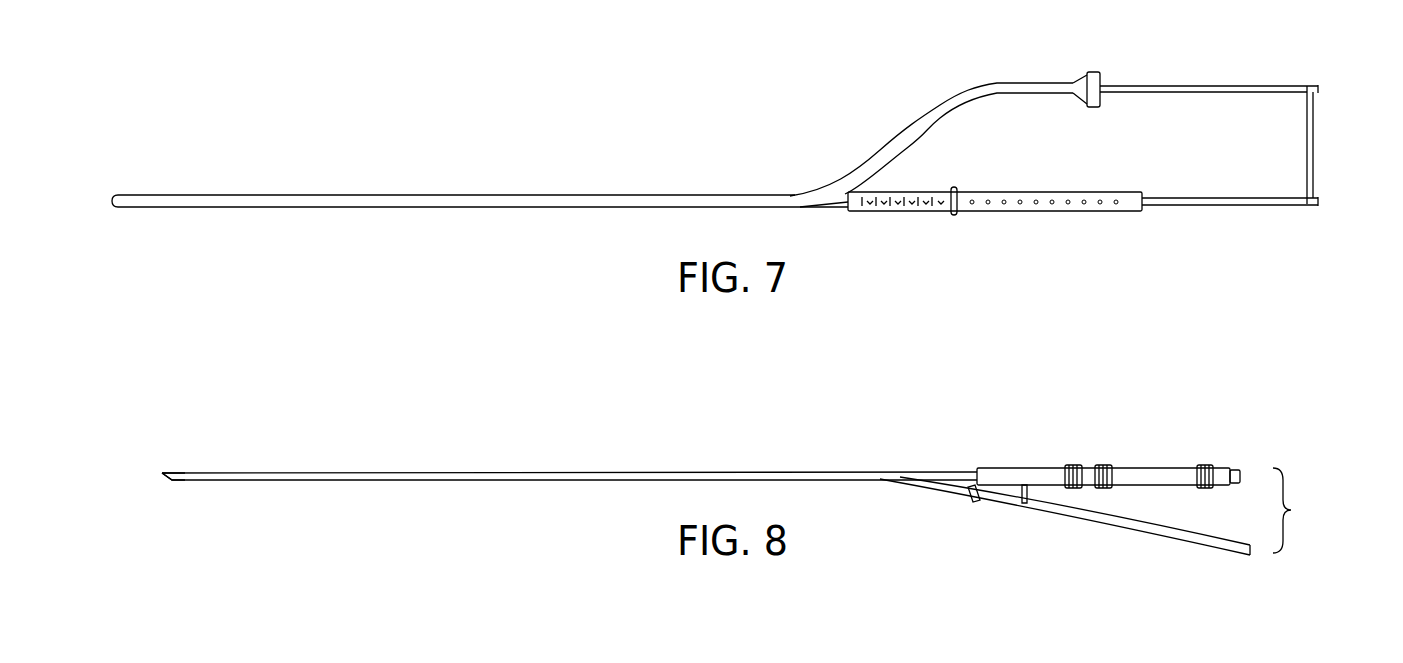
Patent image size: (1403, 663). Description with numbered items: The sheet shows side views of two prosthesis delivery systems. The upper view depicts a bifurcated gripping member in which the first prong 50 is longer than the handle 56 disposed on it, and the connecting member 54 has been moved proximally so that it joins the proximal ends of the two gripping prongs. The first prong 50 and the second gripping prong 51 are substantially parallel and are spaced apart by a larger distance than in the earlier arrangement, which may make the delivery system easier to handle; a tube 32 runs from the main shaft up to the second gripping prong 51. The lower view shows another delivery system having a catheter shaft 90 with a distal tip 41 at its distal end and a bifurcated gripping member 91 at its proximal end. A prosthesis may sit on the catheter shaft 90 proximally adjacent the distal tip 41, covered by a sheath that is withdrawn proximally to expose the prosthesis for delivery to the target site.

In FIG. 7, the guidewire tube 32 is at (880, 150).
In FIG. 7, the first prong 50 is at (1237, 206).
In FIG. 7, the second gripping prong 51 is at (1157, 86).
In FIG. 7, the connecting member 54 is at (1315, 150).
In FIG. 7, the handle 56 is at (1050, 212).
In FIG. 8, the distal tip 41 is at (187, 472).
In FIG. 8, the catheter shaft 90 is at (337, 472).
In FIG. 8, the bifurcated gripping member 91 is at (1102, 510).